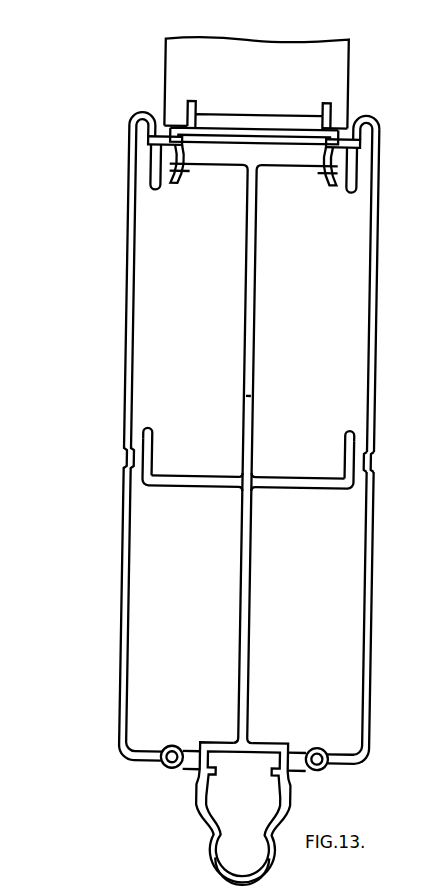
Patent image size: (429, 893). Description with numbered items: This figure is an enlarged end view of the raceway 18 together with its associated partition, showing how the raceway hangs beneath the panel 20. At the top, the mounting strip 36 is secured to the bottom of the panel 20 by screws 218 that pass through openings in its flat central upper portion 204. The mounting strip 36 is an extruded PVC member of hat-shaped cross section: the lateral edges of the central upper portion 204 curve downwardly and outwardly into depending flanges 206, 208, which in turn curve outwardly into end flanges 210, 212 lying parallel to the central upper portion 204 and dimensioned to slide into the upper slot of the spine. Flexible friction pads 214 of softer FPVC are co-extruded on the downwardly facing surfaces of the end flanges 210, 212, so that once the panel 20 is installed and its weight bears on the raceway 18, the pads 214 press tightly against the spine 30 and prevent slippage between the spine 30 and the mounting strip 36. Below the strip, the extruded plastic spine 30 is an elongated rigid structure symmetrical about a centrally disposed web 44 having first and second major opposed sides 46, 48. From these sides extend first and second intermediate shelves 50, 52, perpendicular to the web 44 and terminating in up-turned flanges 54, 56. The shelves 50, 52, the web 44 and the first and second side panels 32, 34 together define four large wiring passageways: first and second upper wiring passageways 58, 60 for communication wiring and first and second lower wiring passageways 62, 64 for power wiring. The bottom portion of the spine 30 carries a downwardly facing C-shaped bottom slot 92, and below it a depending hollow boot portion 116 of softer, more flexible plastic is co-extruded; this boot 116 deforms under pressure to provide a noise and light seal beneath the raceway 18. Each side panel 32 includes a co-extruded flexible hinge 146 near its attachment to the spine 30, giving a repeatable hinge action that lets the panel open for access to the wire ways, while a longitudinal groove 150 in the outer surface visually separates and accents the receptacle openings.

The raceway 18 is at (196, 844).
The panel 20 is at (349, 77).
The extruded plastic spine 30 is at (294, 355).
The first side panel 32 is at (175, 312).
The second side panel 34 is at (366, 303).
The mounting strip 36 is at (218, 140).
The web 44 is at (254, 425).
The first major side 46 is at (250, 275).
The second major side 48 is at (247, 398).
The first intermediate shelf 50 is at (222, 478).
The second intermediate shelf 52 is at (314, 478).
The up-turned flange 54 is at (148, 447).
The up-turned flange 56 is at (350, 445).
The first upper wiring passageway 58 is at (197, 374).
The second upper wiring passageway 60 is at (322, 394).
The first lower wiring passageway 62 is at (200, 626).
The second lower wiring passageway 64 is at (318, 626).
The bottom slot 92 is at (219, 762).
The boot portion 116 is at (213, 860).
The flexible hinge 146 is at (157, 760).
The longitudinal groove 150 is at (373, 465).
The flat central upper portion 204 is at (232, 128).
The depending flange 206 is at (208, 165).
The depending flange 208 is at (312, 185).
The end flange 210 is at (170, 118).
The end flange 212 is at (340, 158).
The friction pads 214 is at (173, 190).
The screws 218 is at (275, 150).